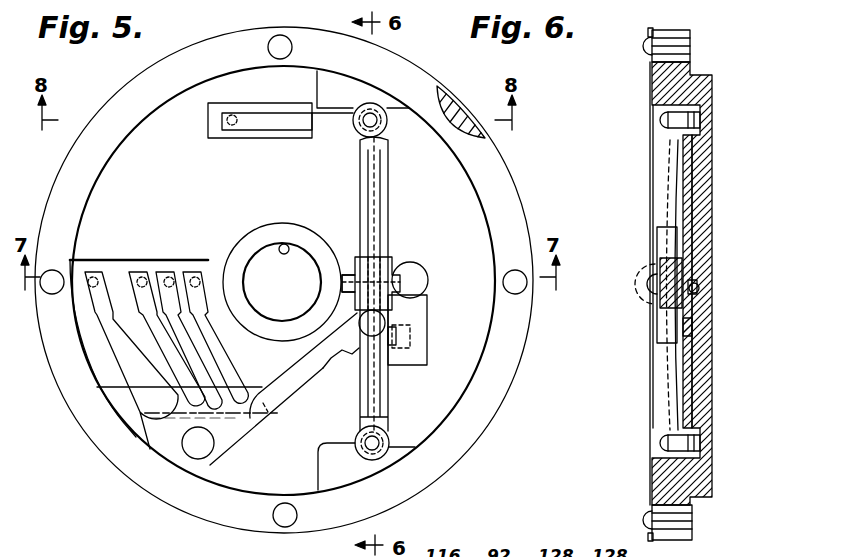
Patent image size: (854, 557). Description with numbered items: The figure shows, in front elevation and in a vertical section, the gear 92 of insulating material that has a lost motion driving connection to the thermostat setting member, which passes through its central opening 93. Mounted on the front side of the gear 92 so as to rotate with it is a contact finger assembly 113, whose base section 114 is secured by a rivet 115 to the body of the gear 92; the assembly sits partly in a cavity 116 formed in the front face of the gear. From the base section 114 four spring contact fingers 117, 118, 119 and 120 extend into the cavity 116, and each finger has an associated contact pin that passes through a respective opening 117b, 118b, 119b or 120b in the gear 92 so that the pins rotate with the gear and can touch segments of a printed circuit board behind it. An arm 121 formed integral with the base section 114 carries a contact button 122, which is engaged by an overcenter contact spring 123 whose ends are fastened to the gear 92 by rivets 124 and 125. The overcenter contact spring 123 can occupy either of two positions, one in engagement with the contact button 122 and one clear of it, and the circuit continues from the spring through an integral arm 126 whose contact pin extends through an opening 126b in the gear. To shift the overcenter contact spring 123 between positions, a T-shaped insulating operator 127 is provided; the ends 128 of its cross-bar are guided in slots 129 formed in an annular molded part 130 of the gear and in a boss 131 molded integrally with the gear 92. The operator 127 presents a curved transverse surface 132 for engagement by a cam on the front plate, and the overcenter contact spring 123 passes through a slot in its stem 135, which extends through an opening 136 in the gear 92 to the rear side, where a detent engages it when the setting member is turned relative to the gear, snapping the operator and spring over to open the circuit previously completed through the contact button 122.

In FIG. 5, the gear 92 is at (494, 418).
In FIG. 6, the gear 92 is at (690, 72).
In FIG. 5, the central opening 93 is at (287, 244).
In FIG. 5, the contact finger assembly 113 is at (268, 427).
In FIG. 5, the base section 114 is at (240, 447).
In FIG. 5, the rivet 115 is at (204, 455).
In FIG. 5, the cavity 116 is at (100, 370).
In FIG. 5, the spring contact finger 117 is at (207, 280).
In FIG. 5, the opening 117b is at (196, 276).
In FIG. 5, the spring contact finger 118 is at (166, 268).
In FIG. 5, the opening 118b is at (170, 276).
In FIG. 5, the spring contact finger 119 is at (137, 268).
In FIG. 5, the opening 119b is at (141, 276).
In FIG. 5, the spring contact finger 120 is at (108, 303).
In FIG. 5, the opening 120b is at (90, 276).
In FIG. 5, the arm 121 is at (324, 366).
In FIG. 5, the contact button 122 is at (410, 320).
In FIG. 6, the contact button 122 is at (693, 327).
In FIG. 5, the overcenter contact spring 123 is at (378, 174).
In FIG. 6, the overcenter contact spring 123 is at (693, 215).
In FIG. 5, the rivet 124 is at (380, 442).
In FIG. 6, the rivet 124 is at (700, 445).
In FIG. 5, the rivet 125 is at (371, 112).
In FIG. 6, the rivet 125 is at (700, 120).
In FIG. 5, the arm 126 is at (260, 125).
In FIG. 5, the opening 126b is at (238, 115).
In FIG. 5, the T-shaped insulating operator 127 is at (406, 258).
In FIG. 6, the T-shaped insulating operator 127 is at (641, 264).
In FIG. 5, the ends of the cross-bar 128 is at (343, 283).
In FIG. 5, the slots 129 is at (362, 270).
In FIG. 5, the annular molded part 130 is at (274, 225).
In FIG. 6, the annular molded part 130 is at (657, 340).
In FIG. 5, the boss 131 is at (420, 268).
In FIG. 5, the curved transverse surface 132 is at (376, 258).
In FIG. 6, the curved transverse surface 132 is at (637, 290).
In FIG. 6, the stem 135 is at (699, 289).
In FIG. 6, the opening 136 is at (693, 284).